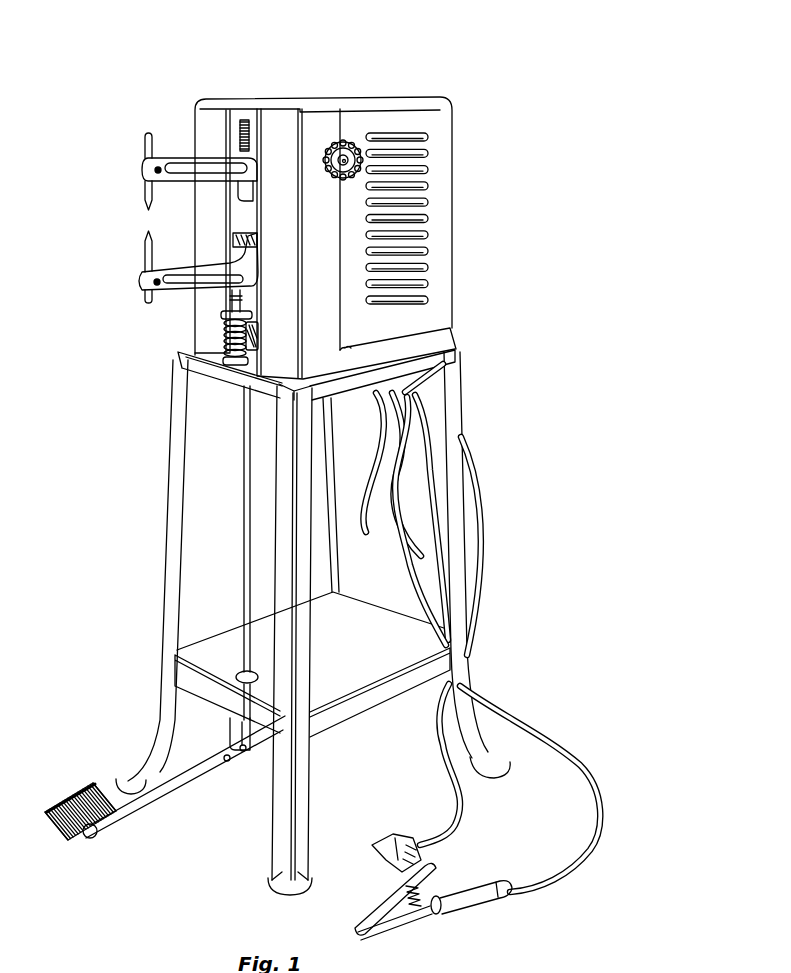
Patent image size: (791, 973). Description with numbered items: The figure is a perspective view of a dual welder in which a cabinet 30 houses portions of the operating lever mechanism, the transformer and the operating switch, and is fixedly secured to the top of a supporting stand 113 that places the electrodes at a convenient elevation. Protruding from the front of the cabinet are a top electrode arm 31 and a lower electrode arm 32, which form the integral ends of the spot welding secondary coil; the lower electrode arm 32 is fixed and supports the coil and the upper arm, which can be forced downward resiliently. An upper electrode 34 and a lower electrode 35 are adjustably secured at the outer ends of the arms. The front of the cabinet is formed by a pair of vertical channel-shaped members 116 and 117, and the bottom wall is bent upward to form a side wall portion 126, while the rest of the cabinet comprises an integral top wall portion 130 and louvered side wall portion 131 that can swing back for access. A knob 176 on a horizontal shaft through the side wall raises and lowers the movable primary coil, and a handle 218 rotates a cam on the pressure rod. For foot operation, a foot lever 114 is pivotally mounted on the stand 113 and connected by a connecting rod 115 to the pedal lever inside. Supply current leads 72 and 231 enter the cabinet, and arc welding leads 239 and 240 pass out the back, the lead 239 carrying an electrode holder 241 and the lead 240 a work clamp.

The cabinet 30 is at (460, 196).
The top electrode arm 31 is at (175, 168).
The lower electrode arm 32 is at (185, 279).
The upper electrode 34 is at (144, 195).
The lower electrode 35 is at (142, 252).
The supply current lead 72 is at (382, 398).
The supporting stand 113 is at (172, 547).
The foot lever 114 is at (190, 780).
The connecting rod 115 is at (244, 522).
The vertical channel-shaped member 116 is at (277, 123).
The vertical channel-shaped member 117 is at (208, 122).
The cabinet side wall portion 126 is at (440, 341).
The top wall portion 130 is at (350, 103).
The side wall portion 131 is at (438, 264).
The knob 176 is at (335, 142).
The handle 218 is at (192, 350).
The supply current lead 231 is at (412, 432).
The arc welding lead 239 is at (409, 560).
The arc welding lead 240 is at (447, 782).
The electrode holder 241 is at (403, 923).